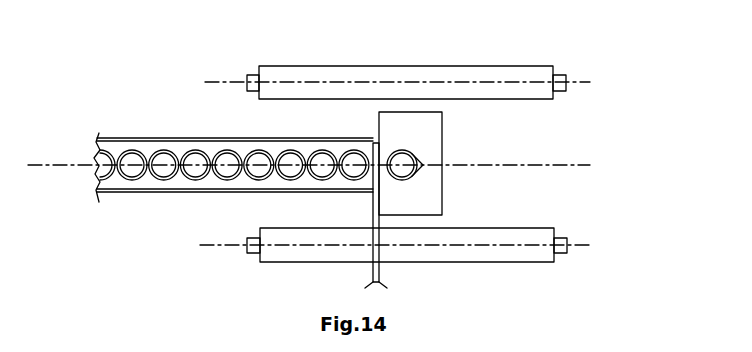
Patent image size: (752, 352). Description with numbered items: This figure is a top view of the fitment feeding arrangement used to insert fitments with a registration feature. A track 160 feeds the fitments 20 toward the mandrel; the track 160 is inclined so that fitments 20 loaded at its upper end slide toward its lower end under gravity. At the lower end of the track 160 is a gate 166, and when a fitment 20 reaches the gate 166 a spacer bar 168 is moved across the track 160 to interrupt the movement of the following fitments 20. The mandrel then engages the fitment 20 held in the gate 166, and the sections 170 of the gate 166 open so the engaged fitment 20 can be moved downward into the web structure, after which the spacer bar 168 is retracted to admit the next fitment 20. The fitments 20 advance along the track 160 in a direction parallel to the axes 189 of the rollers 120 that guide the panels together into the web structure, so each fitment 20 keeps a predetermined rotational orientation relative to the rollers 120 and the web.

The rollers 120 is at (452, 66).
The axes of the rollers 189 is at (228, 80).
The track 160 is at (155, 138).
The fitment 20 is at (160, 182).
The spacer bar 168 is at (380, 268).
The gate 166 is at (441, 156).
The sections of the gate 170 is at (428, 137).